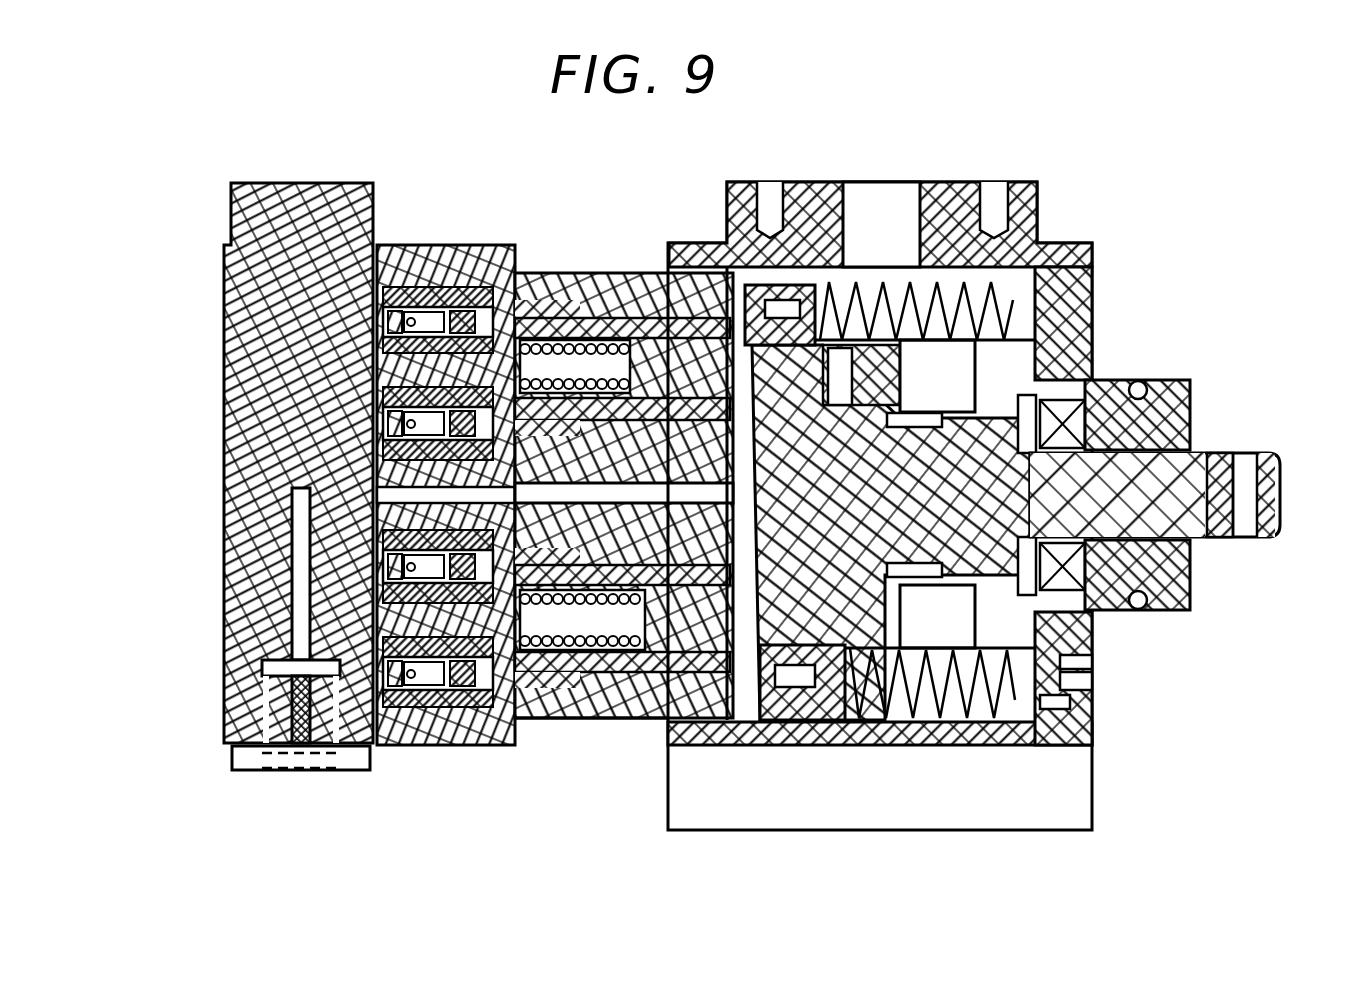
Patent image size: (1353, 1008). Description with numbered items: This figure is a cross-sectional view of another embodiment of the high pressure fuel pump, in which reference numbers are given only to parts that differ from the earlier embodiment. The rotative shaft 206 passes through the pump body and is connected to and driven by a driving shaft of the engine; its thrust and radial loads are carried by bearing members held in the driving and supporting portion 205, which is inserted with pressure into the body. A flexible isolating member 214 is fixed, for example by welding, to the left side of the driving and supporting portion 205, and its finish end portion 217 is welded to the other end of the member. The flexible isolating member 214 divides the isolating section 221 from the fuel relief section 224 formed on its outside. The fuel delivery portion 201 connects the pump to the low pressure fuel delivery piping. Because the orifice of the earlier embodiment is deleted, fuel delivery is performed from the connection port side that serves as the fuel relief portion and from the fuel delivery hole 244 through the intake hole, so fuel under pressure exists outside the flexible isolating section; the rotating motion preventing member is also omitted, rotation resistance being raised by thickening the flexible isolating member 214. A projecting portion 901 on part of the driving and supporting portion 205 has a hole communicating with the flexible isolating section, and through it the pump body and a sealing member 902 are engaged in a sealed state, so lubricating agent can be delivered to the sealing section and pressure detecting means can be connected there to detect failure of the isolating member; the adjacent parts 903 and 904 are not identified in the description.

The fuel delivery portion 201 is at (292, 770).
The fuel delivery hole 244 is at (345, 490).
The fuel relief section 224 is at (738, 710).
The finish end portion 217 is at (788, 700).
The isolating section 221 is at (1052, 300).
The flexible isolating member 214 is at (975, 700).
The driving and supporting portion 205 is at (1192, 395).
The rotative shaft 206 is at (1255, 455).
The projecting portion 901 is at (1094, 703).
The sealing member 902 is at (1092, 742).
The seal ring 903 is at (1094, 683).
The retainer 904 is at (1094, 668).